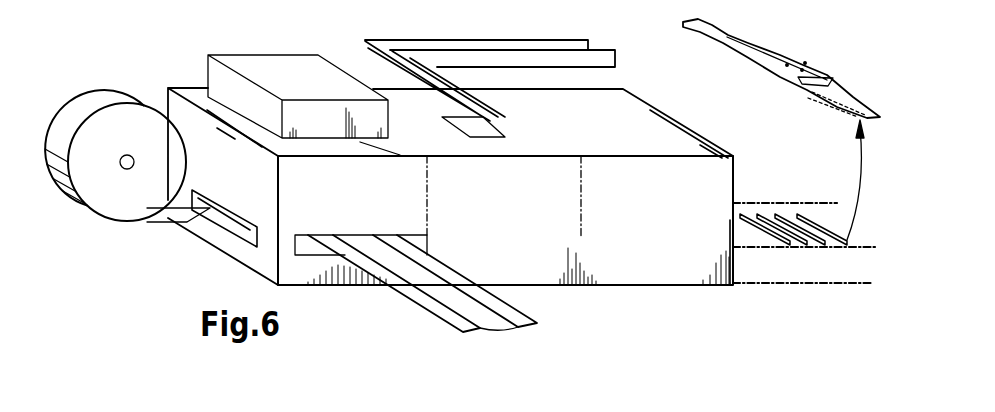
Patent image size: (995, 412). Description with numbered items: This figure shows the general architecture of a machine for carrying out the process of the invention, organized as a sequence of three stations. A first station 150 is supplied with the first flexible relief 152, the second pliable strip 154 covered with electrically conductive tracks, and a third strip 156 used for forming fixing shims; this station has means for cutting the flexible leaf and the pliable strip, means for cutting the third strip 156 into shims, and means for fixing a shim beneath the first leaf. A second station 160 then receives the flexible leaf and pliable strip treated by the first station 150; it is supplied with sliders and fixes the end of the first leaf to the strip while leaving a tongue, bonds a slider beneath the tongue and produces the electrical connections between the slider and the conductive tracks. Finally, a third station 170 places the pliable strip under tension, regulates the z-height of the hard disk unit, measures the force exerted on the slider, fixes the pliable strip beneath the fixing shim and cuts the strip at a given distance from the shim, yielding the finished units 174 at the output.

The first station 150 is at (339, 199).
The first flexible relief 152 is at (423, 307).
The second pliable strip 154 is at (518, 324).
The third strip 156 is at (192, 232).
The second station 160 is at (450, 50).
The third station 170 is at (640, 199).
The stacked cards 174 is at (798, 204).